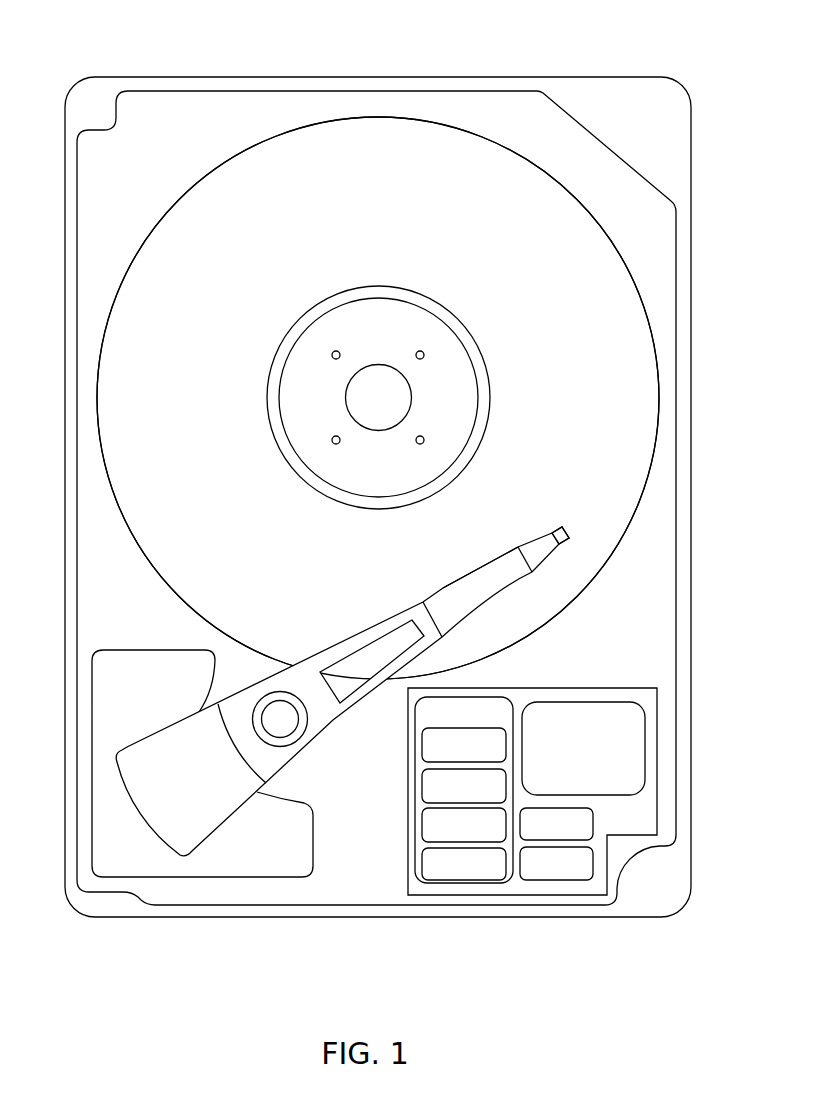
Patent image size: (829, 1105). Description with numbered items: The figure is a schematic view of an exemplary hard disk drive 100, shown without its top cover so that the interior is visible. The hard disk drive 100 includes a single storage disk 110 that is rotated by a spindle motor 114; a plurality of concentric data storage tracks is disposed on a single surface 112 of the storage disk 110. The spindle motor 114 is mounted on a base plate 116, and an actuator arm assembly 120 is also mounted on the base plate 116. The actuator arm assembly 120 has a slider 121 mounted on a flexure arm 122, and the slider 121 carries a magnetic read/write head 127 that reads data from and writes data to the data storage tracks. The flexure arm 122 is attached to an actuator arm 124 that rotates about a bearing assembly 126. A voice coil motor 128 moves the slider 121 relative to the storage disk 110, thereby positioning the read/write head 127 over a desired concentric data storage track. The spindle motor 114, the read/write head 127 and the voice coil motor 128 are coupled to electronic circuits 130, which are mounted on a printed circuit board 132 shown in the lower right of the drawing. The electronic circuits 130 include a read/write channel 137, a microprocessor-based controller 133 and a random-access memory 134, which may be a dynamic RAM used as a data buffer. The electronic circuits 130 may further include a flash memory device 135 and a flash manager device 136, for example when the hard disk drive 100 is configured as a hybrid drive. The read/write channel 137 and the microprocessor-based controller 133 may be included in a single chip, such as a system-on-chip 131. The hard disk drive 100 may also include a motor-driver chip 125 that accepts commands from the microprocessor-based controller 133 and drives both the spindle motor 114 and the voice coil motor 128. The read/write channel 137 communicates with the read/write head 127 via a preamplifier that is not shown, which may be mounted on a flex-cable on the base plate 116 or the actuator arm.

The hard disk drive 100 is at (148, 53).
The storage disk 110 is at (178, 202).
The surface 112 is at (173, 384).
The spindle motor 114 is at (464, 348).
The base plate 116 is at (677, 520).
The actuator arm assembly 120 is at (378, 486).
The slider 121 is at (568, 530).
The flexure arm 122 is at (532, 543).
The actuator arm 124 is at (436, 590).
The motor-driver chip 125 is at (538, 837).
The bearing assembly 126 is at (295, 747).
The magnetic read/write head 127 is at (558, 517).
The voice coil motor 128 is at (315, 827).
The electronic circuits 130 is at (530, 751).
The system-on-chip 131 is at (445, 723).
The printed circuit board 132 is at (600, 688).
The microprocessor-based controller 133 is at (445, 759).
The random-access memory 134 is at (538, 876).
The flash memory device 135 is at (565, 760).
The flash manager device 136 is at (445, 800).
The read/write channel 137 is at (445, 839).